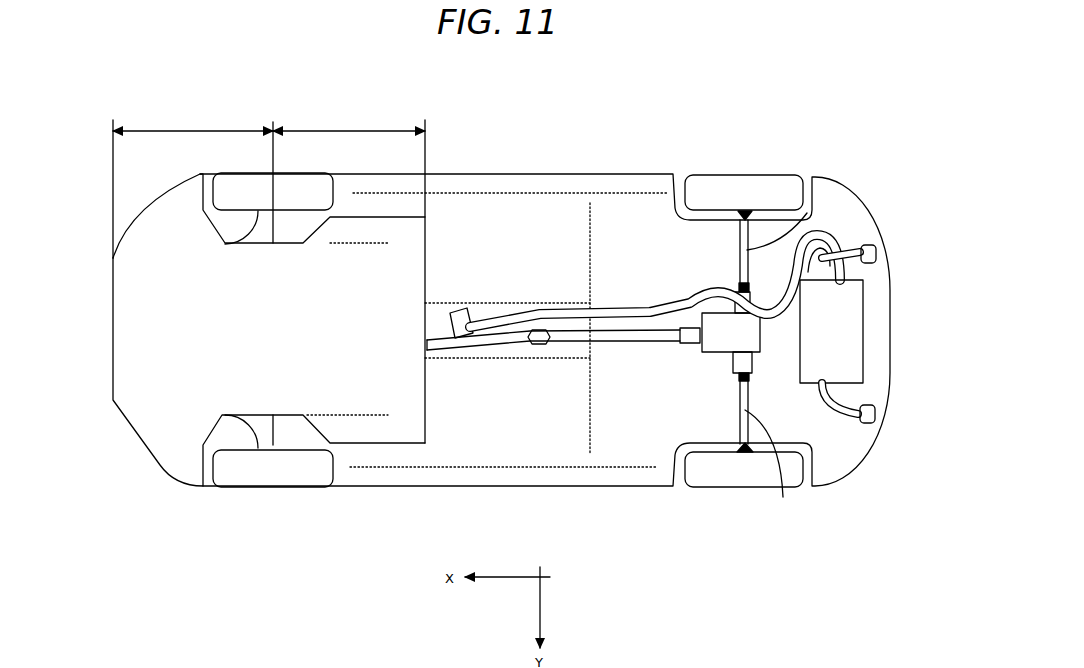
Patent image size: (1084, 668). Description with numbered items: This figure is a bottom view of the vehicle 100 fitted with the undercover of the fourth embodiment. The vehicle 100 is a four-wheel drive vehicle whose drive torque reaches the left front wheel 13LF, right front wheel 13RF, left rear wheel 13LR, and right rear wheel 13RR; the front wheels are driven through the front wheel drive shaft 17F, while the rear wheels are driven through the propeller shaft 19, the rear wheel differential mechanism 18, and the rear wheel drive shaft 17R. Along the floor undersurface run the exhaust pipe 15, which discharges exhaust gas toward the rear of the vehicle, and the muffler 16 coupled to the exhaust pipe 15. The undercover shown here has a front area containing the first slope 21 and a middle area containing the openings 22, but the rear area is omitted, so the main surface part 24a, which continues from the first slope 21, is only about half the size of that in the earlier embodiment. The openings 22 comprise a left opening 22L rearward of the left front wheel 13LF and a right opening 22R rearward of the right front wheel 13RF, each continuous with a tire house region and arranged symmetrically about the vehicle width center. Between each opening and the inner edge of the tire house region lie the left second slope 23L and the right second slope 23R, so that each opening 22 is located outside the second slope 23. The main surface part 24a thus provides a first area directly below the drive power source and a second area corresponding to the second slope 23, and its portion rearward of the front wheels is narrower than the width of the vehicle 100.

The vehicle 100 is at (927, 89).
The left front wheel 13LF is at (257, 188).
The right front wheel 13RF is at (256, 470).
The left rear wheel 13LR is at (745, 192).
The right rear wheel 13RR is at (722, 470).
The front wheel drive shaft 17F is at (253, 232).
The rear wheel drive shaft 17R is at (778, 223).
The exhaust pipe 15 is at (563, 323).
The muffler 16 is at (842, 368).
The rear wheel differential mechanism 18 is at (723, 340).
The propeller shaft 19 is at (621, 333).
The first slope 21 is at (155, 313).
The left opening 22L is at (394, 200).
The right opening 22R is at (378, 462).
The openings 22 is at (394, 200).
The left second slope 23L is at (351, 229).
The right second slope 23R is at (353, 432).
The second slope 23 is at (351, 229).
The main surface part 24a is at (267, 333).